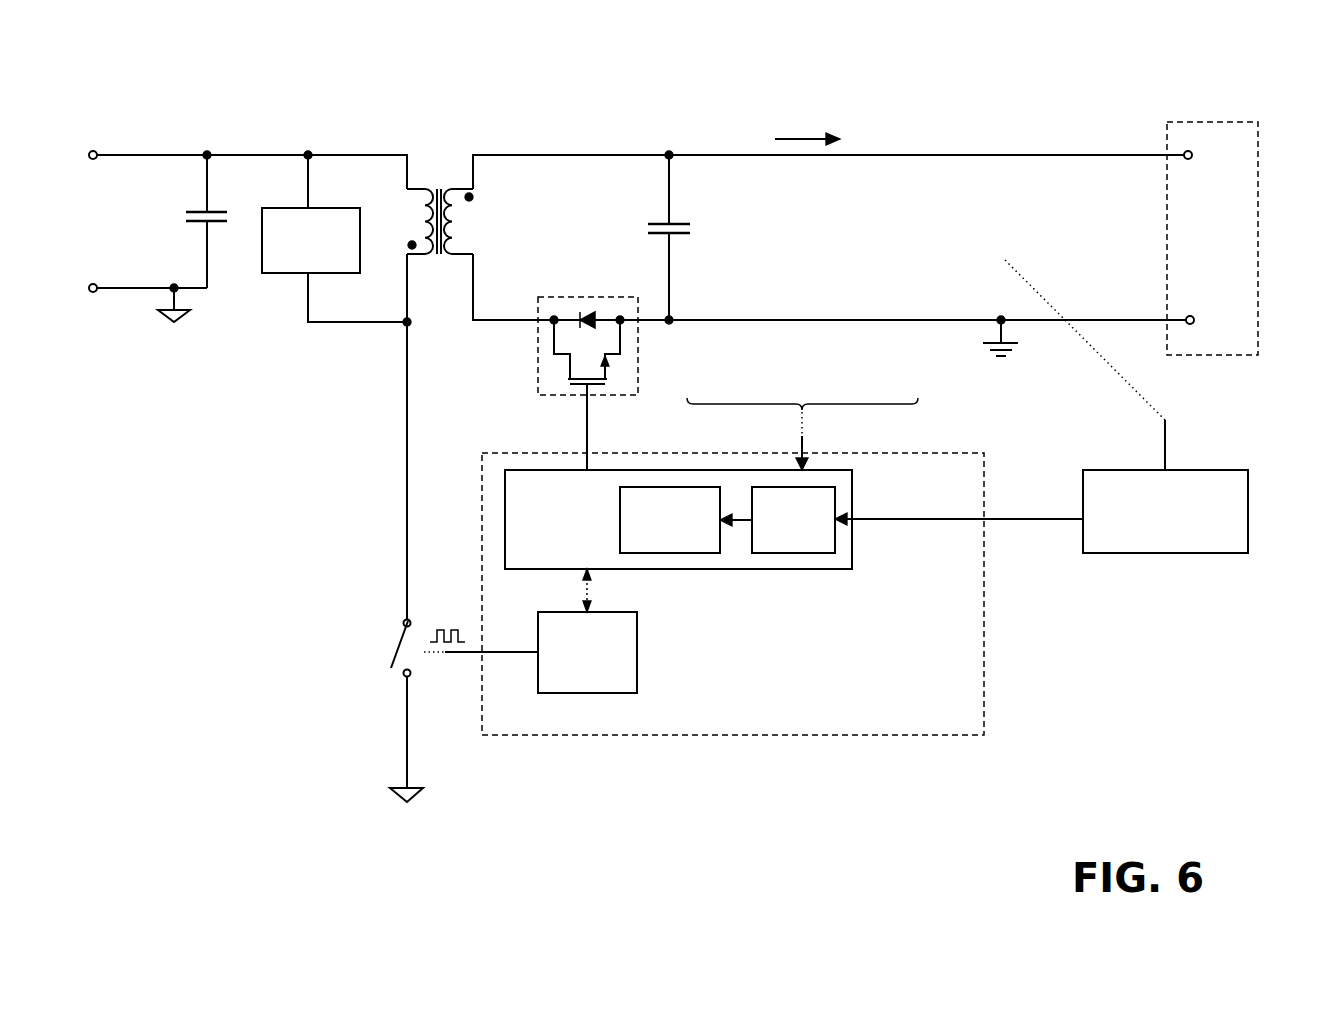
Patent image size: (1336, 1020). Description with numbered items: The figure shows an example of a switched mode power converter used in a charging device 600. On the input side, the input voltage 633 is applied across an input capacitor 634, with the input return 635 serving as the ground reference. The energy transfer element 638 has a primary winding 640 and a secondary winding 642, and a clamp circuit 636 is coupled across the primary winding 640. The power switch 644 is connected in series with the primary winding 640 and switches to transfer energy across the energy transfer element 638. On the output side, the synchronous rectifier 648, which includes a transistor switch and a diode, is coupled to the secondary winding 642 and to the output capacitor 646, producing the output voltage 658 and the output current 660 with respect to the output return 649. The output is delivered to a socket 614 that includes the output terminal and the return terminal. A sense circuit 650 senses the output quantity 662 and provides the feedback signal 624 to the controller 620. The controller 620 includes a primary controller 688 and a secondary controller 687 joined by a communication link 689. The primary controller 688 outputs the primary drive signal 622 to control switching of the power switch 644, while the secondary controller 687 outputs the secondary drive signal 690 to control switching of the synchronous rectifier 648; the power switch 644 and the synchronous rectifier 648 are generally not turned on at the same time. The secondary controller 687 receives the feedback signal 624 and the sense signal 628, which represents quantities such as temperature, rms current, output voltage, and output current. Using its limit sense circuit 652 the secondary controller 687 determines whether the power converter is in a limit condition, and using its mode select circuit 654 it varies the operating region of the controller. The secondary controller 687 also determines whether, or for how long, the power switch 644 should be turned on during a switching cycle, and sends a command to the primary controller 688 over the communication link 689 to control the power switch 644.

The charging device 600 is at (1168, 80).
The socket 614 is at (1248, 113).
The controller 620 is at (950, 740).
The primary drive signal 622 is at (452, 668).
The feedback signal UFB 624 is at (1038, 468).
The sense signal USENSE 628 is at (815, 430).
The input voltage VIN 633 is at (135, 200).
The input capacitor 634 is at (220, 235).
The input return 635 is at (170, 318).
The clamp circuit 636 is at (285, 282).
The energy transfer element T1 638 is at (437, 182).
The primary winding 640 is at (405, 205).
The secondary winding 642 is at (480, 212).
The power switch S1 644 is at (345, 660).
The output capacitor C1 646 is at (613, 212).
The synchronous rectifier 648 is at (575, 295).
The output return 649 is at (1008, 368).
The sense circuit 650 is at (1252, 506).
The limit sense circuit 652 is at (795, 556).
The mode select circuit 654 is at (667, 556).
The output voltage VO 658 is at (728, 210).
The output current IO 660 is at (822, 118).
The output quantity UO 662 is at (1004, 222).
The secondary controller 687 is at (642, 465).
The primary controller 688 is at (640, 646).
The communication link 689 is at (575, 588).
The secondary drive signal 690 is at (575, 428).